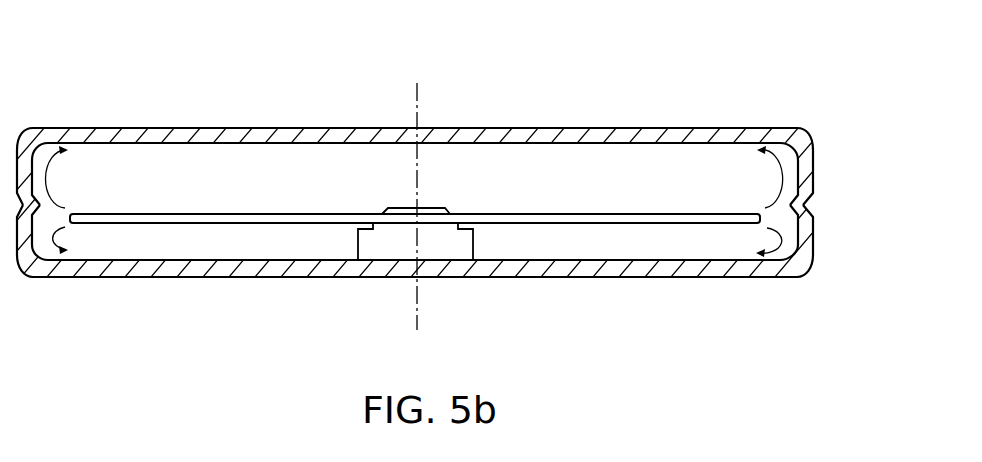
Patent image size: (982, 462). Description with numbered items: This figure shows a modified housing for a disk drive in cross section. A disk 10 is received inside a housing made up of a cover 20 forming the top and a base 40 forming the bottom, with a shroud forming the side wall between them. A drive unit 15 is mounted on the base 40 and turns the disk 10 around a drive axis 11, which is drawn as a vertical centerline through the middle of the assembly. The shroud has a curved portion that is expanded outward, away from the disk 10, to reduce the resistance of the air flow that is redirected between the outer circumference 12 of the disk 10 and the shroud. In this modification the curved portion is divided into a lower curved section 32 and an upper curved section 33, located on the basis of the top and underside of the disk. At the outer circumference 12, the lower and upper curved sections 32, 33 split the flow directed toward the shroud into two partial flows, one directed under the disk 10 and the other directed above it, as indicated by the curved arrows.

The disk 10 is at (143, 214).
The drive axis 11 is at (417, 107).
The outer circumference of the disk 12 is at (745, 142).
The drive unit 15 is at (388, 252).
The cover 20 is at (670, 136).
The lower curved section 32 is at (810, 237).
The upper curved section 33 is at (810, 163).
The base 40 is at (622, 272).